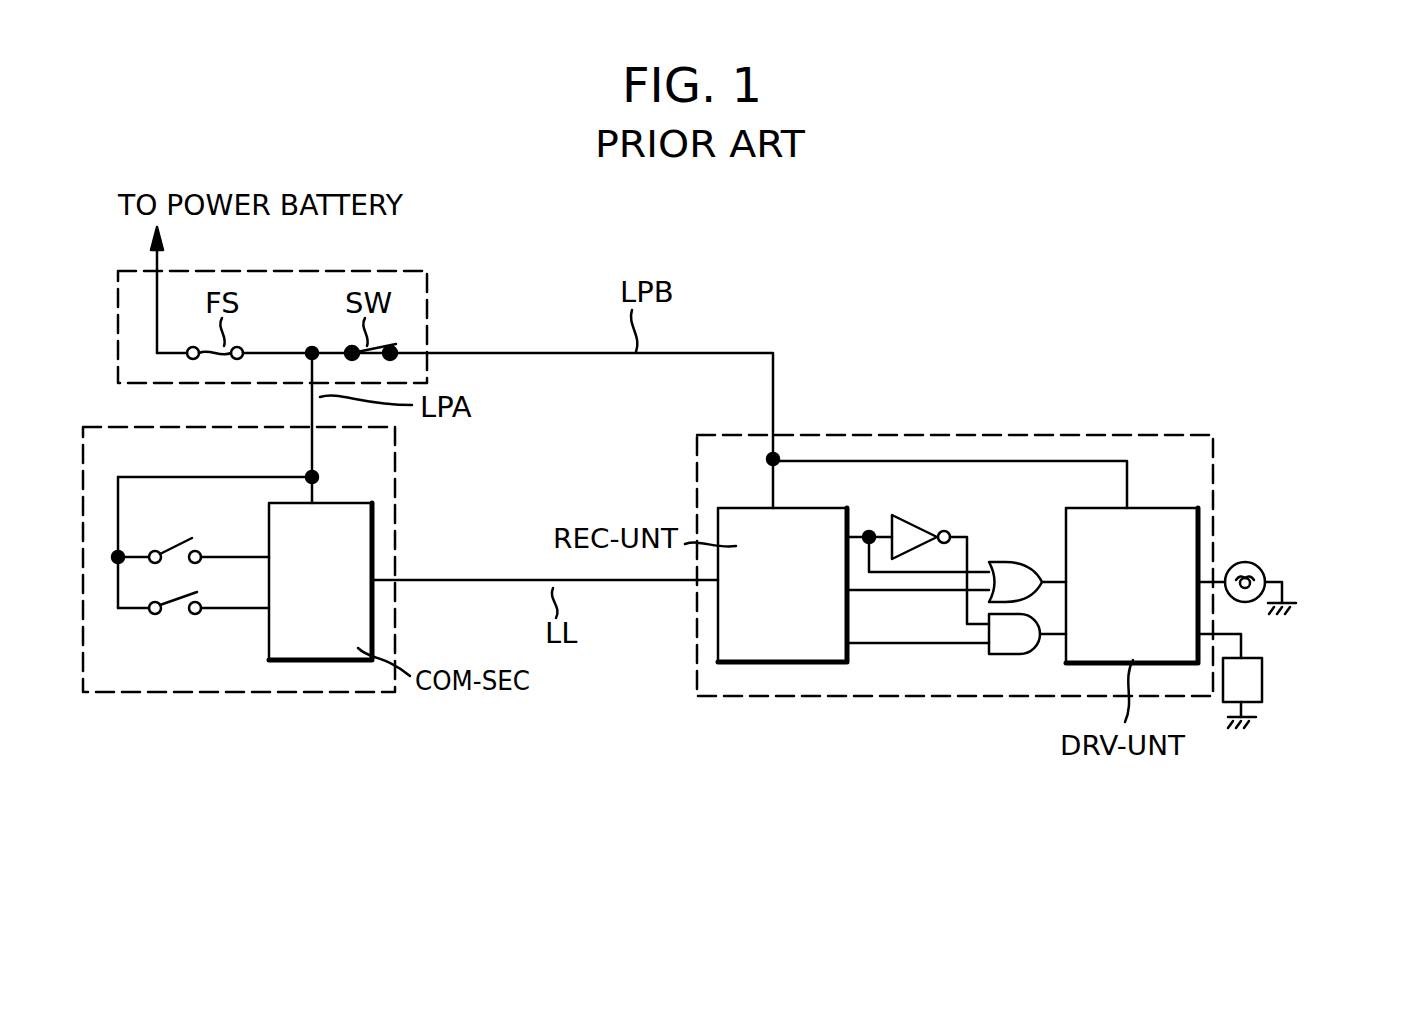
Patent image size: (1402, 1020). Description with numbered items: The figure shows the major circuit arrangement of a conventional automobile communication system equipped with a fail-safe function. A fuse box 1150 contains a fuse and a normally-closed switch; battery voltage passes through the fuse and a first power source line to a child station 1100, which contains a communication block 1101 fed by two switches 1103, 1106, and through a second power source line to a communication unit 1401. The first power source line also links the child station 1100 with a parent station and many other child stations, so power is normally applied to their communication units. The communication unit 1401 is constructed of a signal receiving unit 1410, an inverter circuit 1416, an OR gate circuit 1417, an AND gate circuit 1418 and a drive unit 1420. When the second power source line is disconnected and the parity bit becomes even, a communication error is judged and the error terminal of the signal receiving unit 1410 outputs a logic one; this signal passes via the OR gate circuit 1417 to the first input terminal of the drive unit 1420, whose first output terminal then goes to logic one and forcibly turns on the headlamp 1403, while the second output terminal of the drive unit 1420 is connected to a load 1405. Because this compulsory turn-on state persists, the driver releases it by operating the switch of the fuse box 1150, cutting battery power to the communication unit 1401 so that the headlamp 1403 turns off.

The fuse box 1150 is at (427, 272).
The child station 1100 is at (395, 516).
The communication unit COM-SEC 1101 is at (358, 503).
The switch 1103 is at (205, 548).
The switch 1106 is at (188, 620).
The communication unit 1401 is at (907, 696).
The signal receiving unit 1410 is at (800, 508).
The inverter circuit 1416 is at (912, 513).
The OR gate circuit 1417 is at (1005, 562).
The AND gate circuit 1418 is at (985, 656).
The drive unit 1420 is at (1072, 508).
The headlamp 1403 is at (1262, 566).
The load resistor 1405 is at (1264, 676).